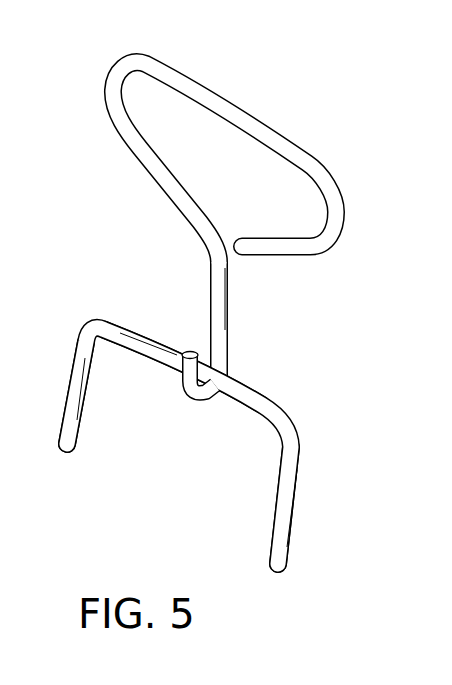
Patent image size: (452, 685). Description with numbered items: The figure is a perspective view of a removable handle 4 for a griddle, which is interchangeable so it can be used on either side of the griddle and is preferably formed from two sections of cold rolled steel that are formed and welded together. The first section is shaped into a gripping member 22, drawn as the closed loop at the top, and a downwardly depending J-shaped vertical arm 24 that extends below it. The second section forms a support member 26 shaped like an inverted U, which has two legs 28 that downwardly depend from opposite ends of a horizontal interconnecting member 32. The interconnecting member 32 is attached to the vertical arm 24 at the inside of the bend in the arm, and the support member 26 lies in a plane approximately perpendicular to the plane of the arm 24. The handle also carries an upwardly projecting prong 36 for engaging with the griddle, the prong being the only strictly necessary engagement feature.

The removable handle 4 is at (236, 324).
The gripping member 22 is at (173, 69).
The J-shaped vertical arm 24 is at (230, 315).
The support member 26 is at (70, 333).
The legs 28 is at (78, 428).
The horizontal interconnecting member 32 is at (262, 400).
The upwardly projecting prong 36 is at (188, 350).